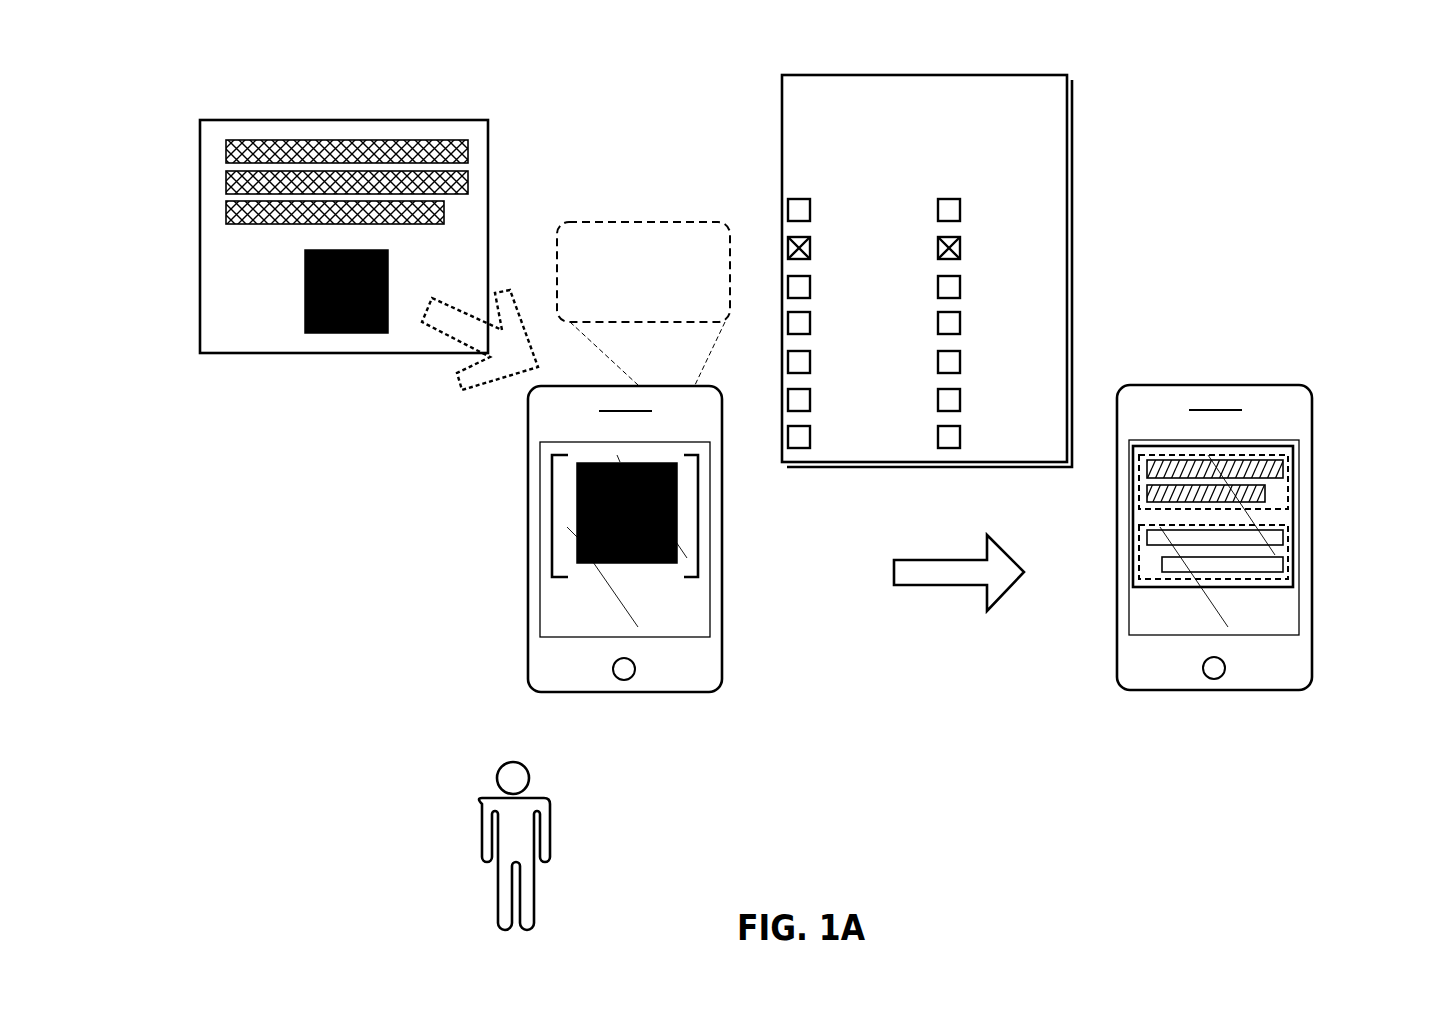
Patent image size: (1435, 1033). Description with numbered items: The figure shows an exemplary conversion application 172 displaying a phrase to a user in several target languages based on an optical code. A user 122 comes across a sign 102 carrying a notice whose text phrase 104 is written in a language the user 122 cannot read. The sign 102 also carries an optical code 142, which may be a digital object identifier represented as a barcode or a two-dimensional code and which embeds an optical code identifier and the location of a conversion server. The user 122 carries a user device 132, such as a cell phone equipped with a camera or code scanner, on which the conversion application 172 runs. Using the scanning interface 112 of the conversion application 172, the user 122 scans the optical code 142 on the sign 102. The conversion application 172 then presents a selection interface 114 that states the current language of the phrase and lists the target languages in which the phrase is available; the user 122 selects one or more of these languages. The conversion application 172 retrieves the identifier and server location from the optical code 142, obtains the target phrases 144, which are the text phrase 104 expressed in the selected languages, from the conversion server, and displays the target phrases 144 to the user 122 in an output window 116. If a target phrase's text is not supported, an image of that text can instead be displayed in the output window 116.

The sign 102 is at (337, 120).
The text phrase 104 is at (225, 147).
The optical code 142 is at (303, 305).
The conversion application 172 is at (643, 303).
The user device 132 is at (528, 599).
The scanning interface 112 is at (698, 482).
The selection interface 114 is at (1073, 160).
The target phrases 144 is at (1293, 452).
The output window 116 is at (1293, 560).
The user 122 is at (542, 798).